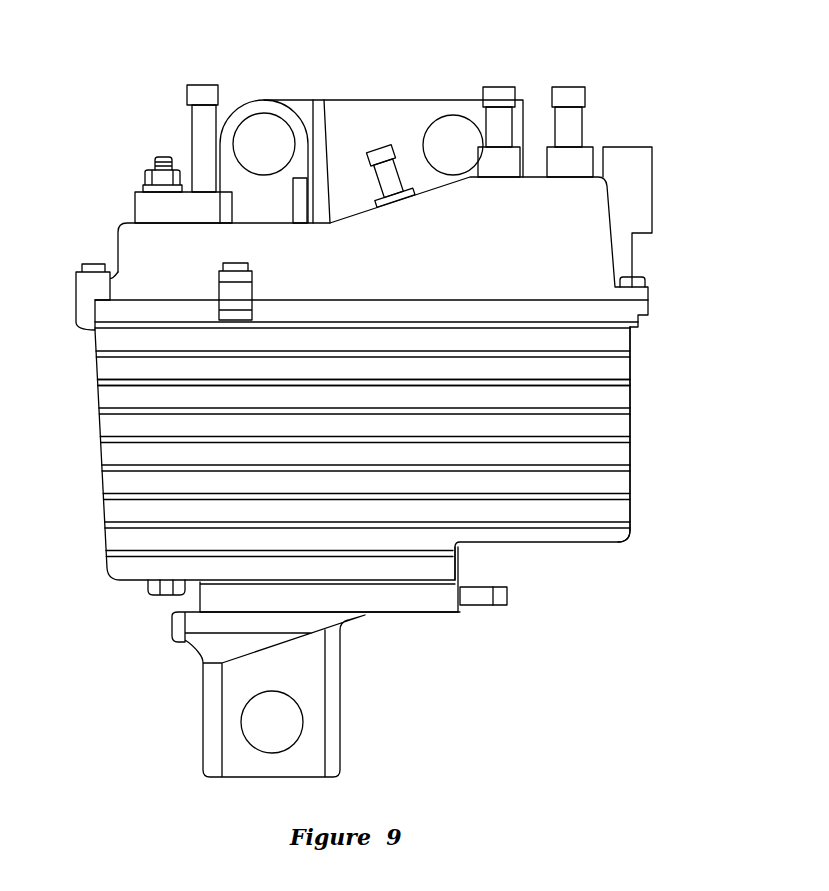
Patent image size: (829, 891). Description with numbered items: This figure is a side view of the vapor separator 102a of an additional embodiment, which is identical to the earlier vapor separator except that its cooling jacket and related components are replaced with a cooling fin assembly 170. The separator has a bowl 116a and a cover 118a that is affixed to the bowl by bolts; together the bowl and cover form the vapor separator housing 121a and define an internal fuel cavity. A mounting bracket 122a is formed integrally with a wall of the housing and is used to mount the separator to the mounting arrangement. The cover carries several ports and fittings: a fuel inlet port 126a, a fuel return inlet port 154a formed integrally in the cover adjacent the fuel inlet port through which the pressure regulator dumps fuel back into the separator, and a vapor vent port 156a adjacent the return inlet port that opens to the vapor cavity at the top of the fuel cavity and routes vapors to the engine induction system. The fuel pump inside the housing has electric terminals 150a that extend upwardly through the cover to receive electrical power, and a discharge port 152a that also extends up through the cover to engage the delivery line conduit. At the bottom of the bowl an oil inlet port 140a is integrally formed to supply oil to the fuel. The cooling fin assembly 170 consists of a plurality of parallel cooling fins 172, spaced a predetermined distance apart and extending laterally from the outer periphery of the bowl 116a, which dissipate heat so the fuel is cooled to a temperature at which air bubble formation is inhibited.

The vapor separator 102a is at (644, 425).
The bowl 116a is at (622, 483).
The cover 118a is at (608, 257).
The vapor separator housing 121a is at (598, 543).
The mounting bracket 122a is at (350, 98).
The fuel inlet port 126a is at (570, 118).
The oil inlet port 140a is at (483, 600).
The electric terminals 150a is at (160, 160).
The discharge port 152a is at (193, 118).
The fuel return inlet port 154a is at (498, 115).
The vapor vent port 156a is at (377, 145).
The cooling fin assembly 170 is at (642, 377).
The cooling fins 172 is at (562, 500).